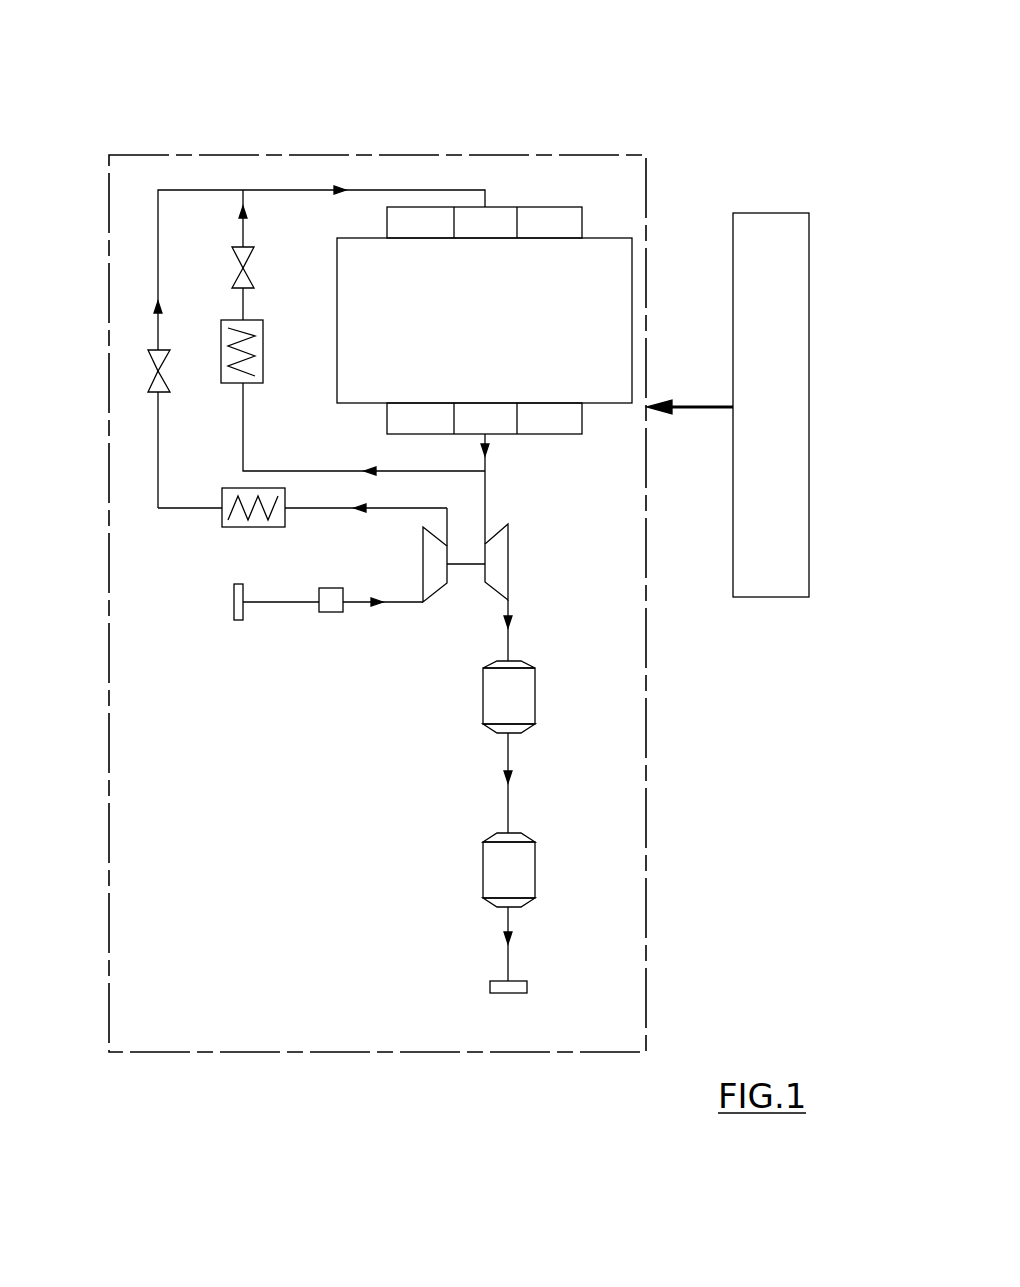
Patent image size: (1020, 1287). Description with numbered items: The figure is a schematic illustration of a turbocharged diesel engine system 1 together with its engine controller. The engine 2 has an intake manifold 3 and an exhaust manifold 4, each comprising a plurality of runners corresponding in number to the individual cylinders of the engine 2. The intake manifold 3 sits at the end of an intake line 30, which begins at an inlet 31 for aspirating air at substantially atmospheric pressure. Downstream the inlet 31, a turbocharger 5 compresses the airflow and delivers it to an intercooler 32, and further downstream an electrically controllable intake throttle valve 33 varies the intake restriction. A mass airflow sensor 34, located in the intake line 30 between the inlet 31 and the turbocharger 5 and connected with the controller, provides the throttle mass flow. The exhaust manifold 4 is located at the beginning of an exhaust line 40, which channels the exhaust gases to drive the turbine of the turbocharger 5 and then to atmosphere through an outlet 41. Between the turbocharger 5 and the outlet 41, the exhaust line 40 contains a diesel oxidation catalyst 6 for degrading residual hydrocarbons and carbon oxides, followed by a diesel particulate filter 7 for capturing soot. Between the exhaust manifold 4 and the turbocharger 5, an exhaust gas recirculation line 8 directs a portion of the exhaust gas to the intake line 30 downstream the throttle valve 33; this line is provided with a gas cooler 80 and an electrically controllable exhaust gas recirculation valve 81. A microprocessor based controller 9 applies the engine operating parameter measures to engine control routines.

The diesel engine system 1 is at (272, 101).
The engine 2 is at (603, 310).
The intake manifold 3 is at (541, 205).
The exhaust manifold 4 is at (550, 440).
The turbocharger 5 is at (455, 615).
The diesel oxidation catalyst 6 is at (520, 678).
The diesel particulate filter 7 is at (520, 841).
The exhaust gas recirculation line 8 is at (325, 470).
The controller 9 is at (790, 278).
The intake line 30 is at (158, 268).
The inlet 31 is at (230, 616).
The intercooler 32 is at (240, 520).
The intake throttle valve 33 is at (150, 380).
The mass airflow sensor 34 is at (330, 605).
The exhaust line 40 is at (490, 492).
The outlet 41 is at (497, 993).
The gas cooler 80 is at (258, 350).
The exhaust gas recirculation valve 81 is at (232, 250).